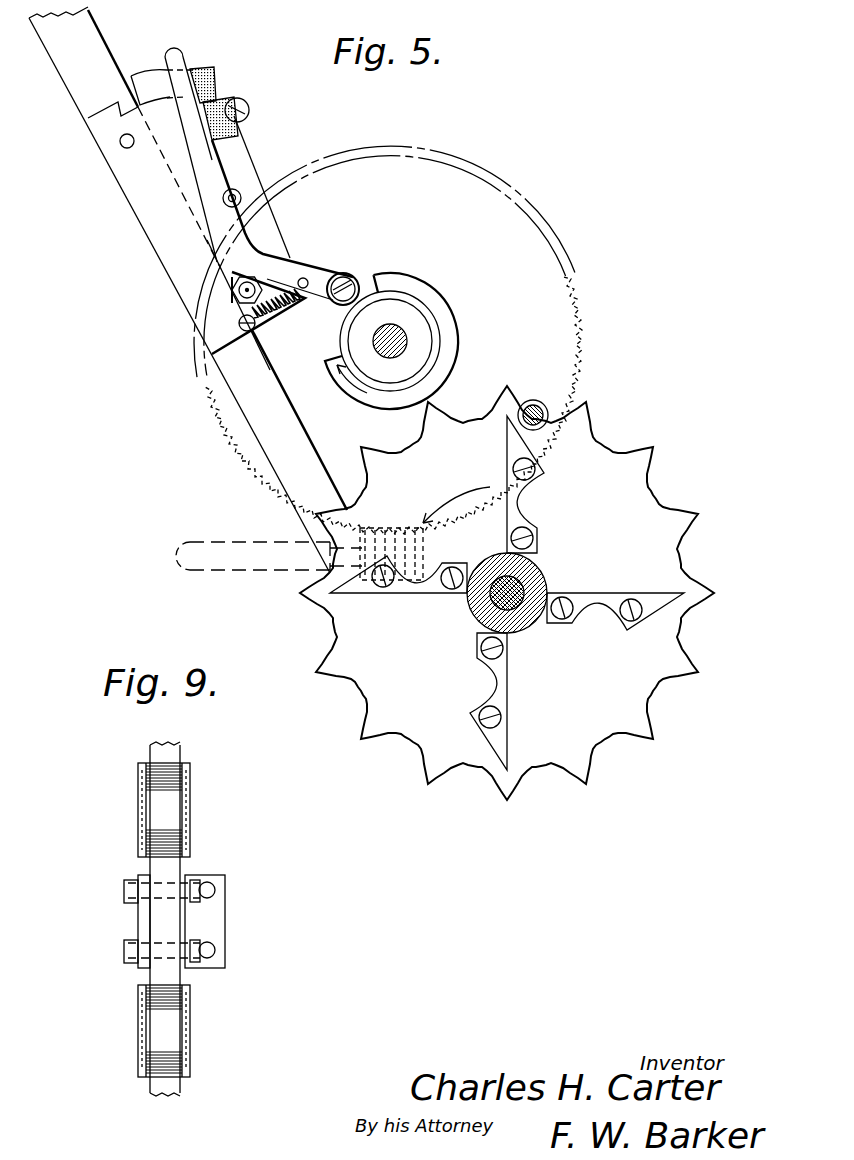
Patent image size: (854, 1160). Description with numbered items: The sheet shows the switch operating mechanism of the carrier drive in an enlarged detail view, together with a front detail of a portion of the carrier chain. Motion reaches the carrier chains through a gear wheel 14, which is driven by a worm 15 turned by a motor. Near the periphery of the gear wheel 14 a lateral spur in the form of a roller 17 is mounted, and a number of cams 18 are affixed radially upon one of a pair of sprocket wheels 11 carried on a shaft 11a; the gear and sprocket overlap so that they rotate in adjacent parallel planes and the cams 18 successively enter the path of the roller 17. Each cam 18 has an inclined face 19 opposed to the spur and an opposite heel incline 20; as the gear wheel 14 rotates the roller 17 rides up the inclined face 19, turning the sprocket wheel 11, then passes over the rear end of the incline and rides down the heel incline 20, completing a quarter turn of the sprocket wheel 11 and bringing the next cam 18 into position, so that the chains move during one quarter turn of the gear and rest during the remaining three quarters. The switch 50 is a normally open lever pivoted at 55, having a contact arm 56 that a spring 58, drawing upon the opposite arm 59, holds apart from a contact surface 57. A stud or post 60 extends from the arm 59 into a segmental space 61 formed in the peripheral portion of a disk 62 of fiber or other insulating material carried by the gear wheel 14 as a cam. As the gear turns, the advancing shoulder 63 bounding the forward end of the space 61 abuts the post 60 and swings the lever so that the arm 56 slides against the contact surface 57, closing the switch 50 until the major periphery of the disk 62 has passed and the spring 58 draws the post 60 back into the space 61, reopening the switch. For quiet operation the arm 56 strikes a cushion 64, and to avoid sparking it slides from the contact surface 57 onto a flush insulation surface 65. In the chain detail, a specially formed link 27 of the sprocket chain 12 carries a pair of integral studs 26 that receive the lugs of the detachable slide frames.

In FIG. 5, the sprocket wheel 11 is at (507, 593).
In FIG. 5, the shaft 11a is at (553, 567).
In FIG. 9, the sprocket chain 12 is at (143, 810).
In FIG. 5, the gear wheel 14 is at (388, 340).
In FIG. 5, the worm 15 is at (360, 595).
In FIG. 5, the roller 17 is at (534, 402).
In FIG. 5, the cam 18 is at (517, 517).
In FIG. 5, the inclined face 19 is at (545, 472).
In FIG. 5, the heel incline 20 is at (537, 493).
In FIG. 9, the stud 26 is at (215, 890).
In FIG. 9, the link 27 is at (193, 875).
In FIG. 5, the switch 50 is at (240, 268).
In FIG. 5, the pivot 55 is at (238, 293).
In FIG. 5, the contact arm 56 is at (210, 163).
In FIG. 5, the contact surface 57 is at (143, 76).
In FIG. 5, the spring 58 is at (270, 322).
In FIG. 5, the opposite arm 59 is at (322, 268).
In FIG. 5, the post 60 is at (352, 279).
In FIG. 5, the segmental space 61 is at (345, 328).
In FIG. 5, the disk 62 is at (447, 318).
In FIG. 5, the advancing shoulder 63 is at (326, 366).
In FIG. 5, the cushion 64 is at (236, 130).
In FIG. 5, the insulation surface 65 is at (203, 72).